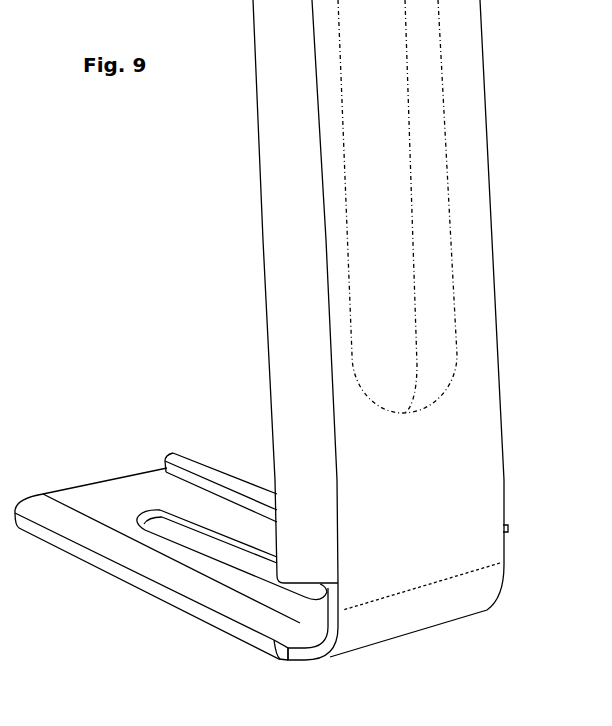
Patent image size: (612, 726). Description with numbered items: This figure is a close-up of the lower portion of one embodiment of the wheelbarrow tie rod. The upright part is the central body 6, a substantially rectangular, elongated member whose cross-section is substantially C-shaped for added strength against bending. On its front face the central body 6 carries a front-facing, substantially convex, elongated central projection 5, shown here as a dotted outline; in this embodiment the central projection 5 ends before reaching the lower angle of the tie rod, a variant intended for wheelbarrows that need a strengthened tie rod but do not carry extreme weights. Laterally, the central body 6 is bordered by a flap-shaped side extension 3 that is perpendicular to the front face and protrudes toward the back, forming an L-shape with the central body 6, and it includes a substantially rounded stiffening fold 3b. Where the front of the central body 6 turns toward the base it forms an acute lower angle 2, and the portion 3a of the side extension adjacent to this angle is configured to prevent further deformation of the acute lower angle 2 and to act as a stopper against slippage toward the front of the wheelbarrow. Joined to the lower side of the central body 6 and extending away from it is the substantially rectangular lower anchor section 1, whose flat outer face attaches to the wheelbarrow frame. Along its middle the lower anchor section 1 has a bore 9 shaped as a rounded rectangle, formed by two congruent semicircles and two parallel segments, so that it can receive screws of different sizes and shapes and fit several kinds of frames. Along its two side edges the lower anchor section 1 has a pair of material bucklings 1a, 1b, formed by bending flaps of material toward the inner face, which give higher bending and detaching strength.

The lower anchor section 1 is at (120, 478).
The material buckling 1a is at (97, 540).
The material buckling 1b is at (203, 463).
The acute lower angle 2 is at (502, 590).
The side extension 3 is at (278, 200).
The portion of the side extension 3a is at (277, 548).
The stiffening fold 3b is at (330, 357).
The central projection 5 is at (413, 163).
The central body 6 is at (431, 492).
The bore 9 is at (218, 555).